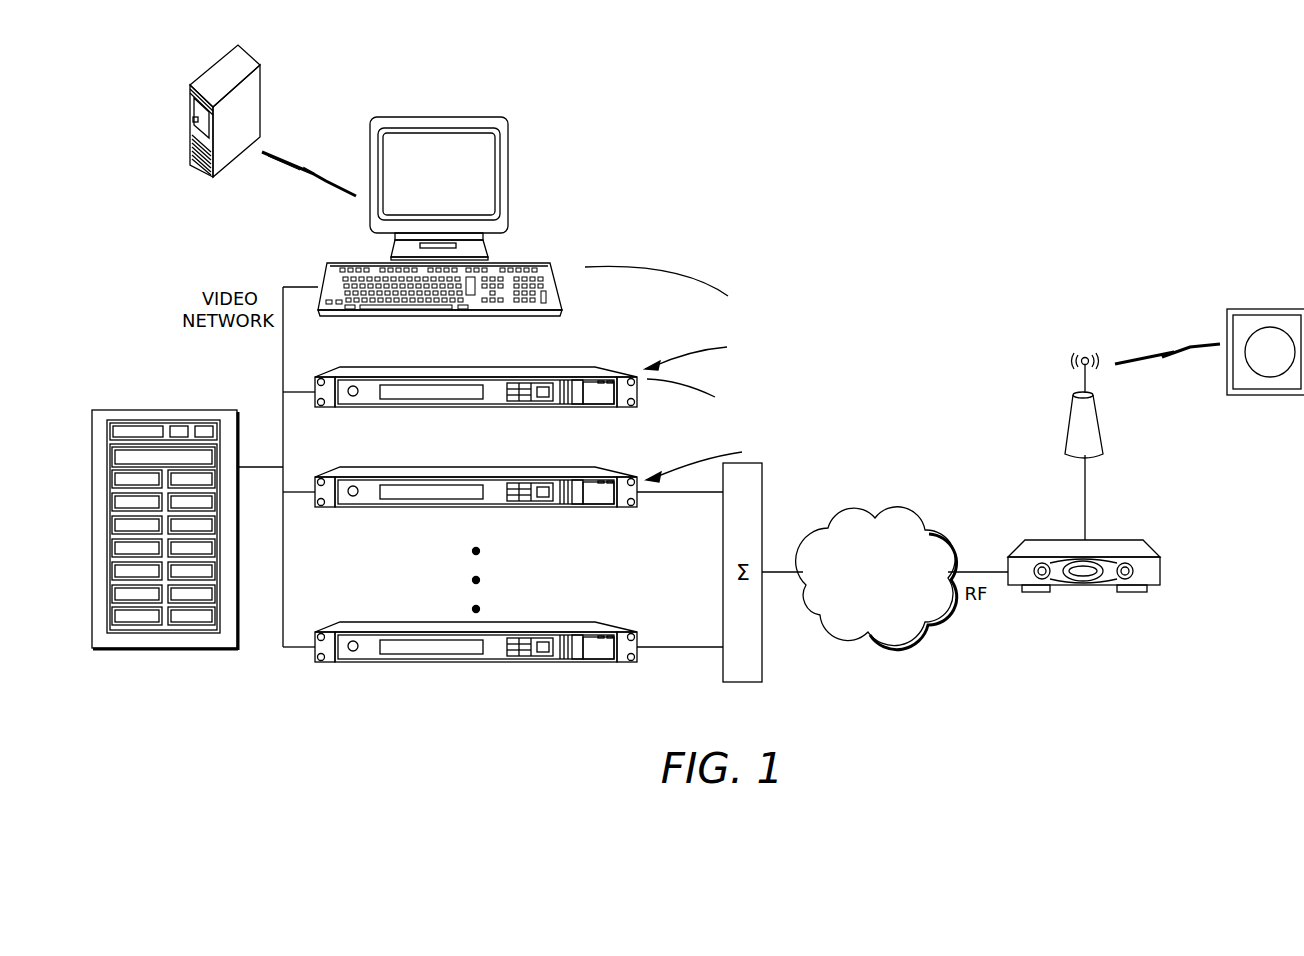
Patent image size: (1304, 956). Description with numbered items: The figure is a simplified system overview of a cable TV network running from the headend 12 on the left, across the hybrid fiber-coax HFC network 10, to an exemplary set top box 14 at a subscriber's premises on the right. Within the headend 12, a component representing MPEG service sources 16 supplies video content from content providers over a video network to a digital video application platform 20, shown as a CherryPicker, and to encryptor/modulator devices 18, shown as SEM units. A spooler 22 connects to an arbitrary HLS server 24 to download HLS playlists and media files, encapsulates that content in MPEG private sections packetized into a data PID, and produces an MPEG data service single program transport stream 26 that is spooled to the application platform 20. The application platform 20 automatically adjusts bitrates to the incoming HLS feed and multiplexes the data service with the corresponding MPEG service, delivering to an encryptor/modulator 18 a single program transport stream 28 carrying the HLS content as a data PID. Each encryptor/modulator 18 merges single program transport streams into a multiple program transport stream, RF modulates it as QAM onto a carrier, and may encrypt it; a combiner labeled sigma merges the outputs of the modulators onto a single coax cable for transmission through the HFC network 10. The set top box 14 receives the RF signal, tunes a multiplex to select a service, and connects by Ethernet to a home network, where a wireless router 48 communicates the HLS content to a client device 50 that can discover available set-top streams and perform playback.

The hybrid fiber-coax cable (HFC) network 10 is at (922, 521).
The headend 12 is at (836, 192).
The set top box (STB) 14 is at (1160, 572).
The MPEG-2 service source 16 is at (163, 408).
The encryptor/modulator device 18 is at (567, 469).
The digital video application platform 20 is at (567, 369).
The spooler 22 is at (490, 118).
The HLS server 24 is at (248, 48).
The MPEG data service single program transport stream (SPTS) 26 is at (849, 296).
The MPEG-2 single program transport stream (SPTS) 28 is at (849, 399).
The wireless router 48 is at (1068, 423).
The client device 50 is at (1269, 306).